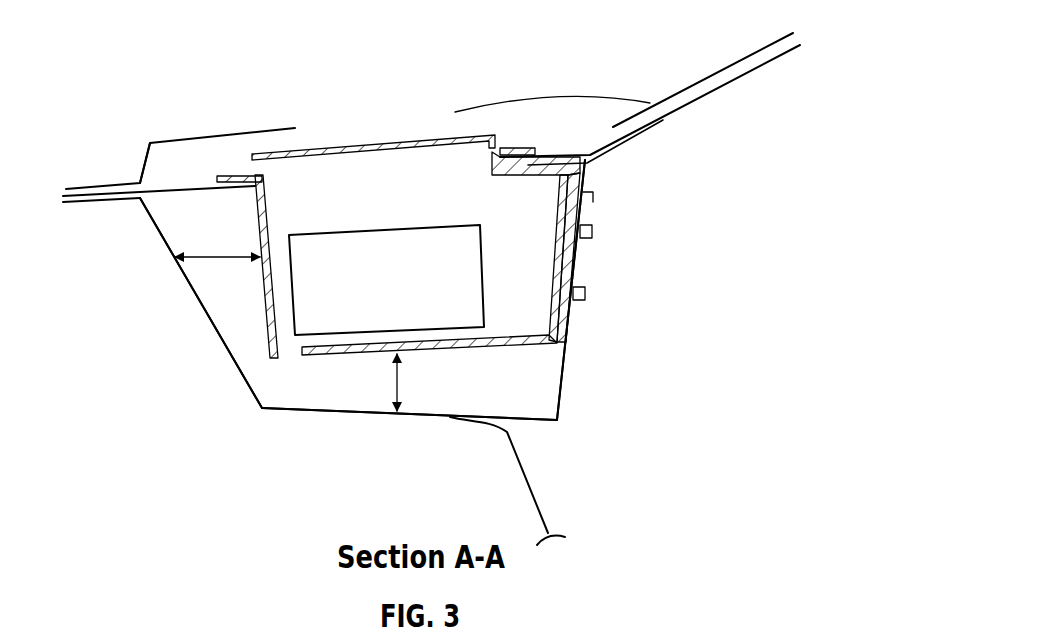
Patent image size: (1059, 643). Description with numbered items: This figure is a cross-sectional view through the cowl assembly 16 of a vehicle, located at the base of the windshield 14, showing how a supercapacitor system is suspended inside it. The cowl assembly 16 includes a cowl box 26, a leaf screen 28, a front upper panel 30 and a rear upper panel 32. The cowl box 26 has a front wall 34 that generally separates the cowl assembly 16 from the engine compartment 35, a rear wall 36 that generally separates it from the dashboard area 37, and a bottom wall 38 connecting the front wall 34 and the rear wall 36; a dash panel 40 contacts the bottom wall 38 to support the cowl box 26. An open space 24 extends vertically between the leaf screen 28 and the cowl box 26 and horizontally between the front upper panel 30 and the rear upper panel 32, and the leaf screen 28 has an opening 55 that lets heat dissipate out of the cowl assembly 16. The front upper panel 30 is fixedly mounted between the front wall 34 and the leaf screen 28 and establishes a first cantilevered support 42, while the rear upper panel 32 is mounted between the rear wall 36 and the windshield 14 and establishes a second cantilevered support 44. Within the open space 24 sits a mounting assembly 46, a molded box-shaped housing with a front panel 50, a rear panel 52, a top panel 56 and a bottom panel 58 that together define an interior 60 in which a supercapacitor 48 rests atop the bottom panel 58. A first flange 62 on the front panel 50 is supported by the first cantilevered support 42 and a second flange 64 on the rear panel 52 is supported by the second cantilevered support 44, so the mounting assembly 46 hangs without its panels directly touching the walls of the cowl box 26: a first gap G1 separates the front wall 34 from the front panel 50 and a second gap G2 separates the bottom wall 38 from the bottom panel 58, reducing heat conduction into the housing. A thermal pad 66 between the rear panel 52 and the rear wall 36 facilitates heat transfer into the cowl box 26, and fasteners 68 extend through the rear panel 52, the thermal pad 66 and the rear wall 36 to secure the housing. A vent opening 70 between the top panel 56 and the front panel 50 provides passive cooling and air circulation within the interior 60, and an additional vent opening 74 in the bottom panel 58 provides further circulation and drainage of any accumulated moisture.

The windshield 14 is at (717, 72).
The cowl assembly 16 is at (124, 166).
The open space 24 is at (252, 347).
The cowl box 26 is at (224, 370).
The leaf screen 28 is at (543, 97).
The front upper panel 30 is at (153, 180).
The rear upper panel 32 is at (600, 135).
The front wall 34 is at (223, 347).
The engine compartment 35 is at (120, 272).
The rear wall 36 is at (560, 383).
The dashboard area 37 is at (640, 282).
The bottom wall 38 is at (308, 412).
The dash panel 40 is at (546, 516).
The first cantilevered support 42 is at (237, 188).
The second cantilevered support 44 is at (514, 174).
The mounting assembly 46 is at (287, 148).
The supercapacitor 48 is at (400, 292).
The front panel 50 is at (263, 293).
The rear panel 52 is at (553, 273).
The opening 55 is at (422, 116).
The top panel 56 is at (365, 146).
The bottom panel 58 is at (460, 343).
The interior 60 is at (402, 215).
The first flange 62 is at (262, 172).
The second flange 64 is at (517, 147).
The thermal pad 66 is at (562, 330).
The fastener 68 is at (594, 233).
The vent opening 70 is at (226, 175).
The additional vent opening 74 is at (263, 410).
The first gap G1 is at (192, 285).
The second gap G2 is at (398, 377).